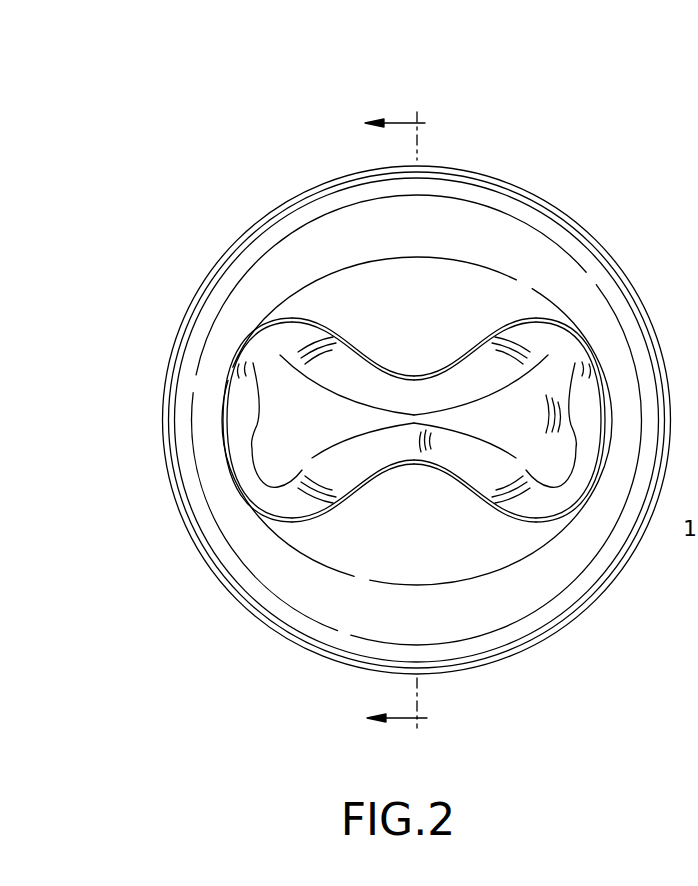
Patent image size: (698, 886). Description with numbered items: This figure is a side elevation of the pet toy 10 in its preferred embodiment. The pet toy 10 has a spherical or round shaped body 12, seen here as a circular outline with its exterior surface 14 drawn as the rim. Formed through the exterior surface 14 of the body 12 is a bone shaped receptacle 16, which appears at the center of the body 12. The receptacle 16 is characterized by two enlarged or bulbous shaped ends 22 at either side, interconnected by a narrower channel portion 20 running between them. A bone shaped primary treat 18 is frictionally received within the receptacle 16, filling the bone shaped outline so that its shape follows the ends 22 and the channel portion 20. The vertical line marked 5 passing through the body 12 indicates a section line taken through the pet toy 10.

The pet toy 10 is at (538, 88).
The body 12 is at (606, 186).
The exterior surface 14 is at (478, 173).
The bone shaped receptacle 16 is at (480, 331).
The bone shaped primary treat 18 is at (309, 429).
The channel portion 20 is at (407, 376).
The bulbous shaped ends 22 is at (263, 321).
The section line 5- 5 is at (396, 420).